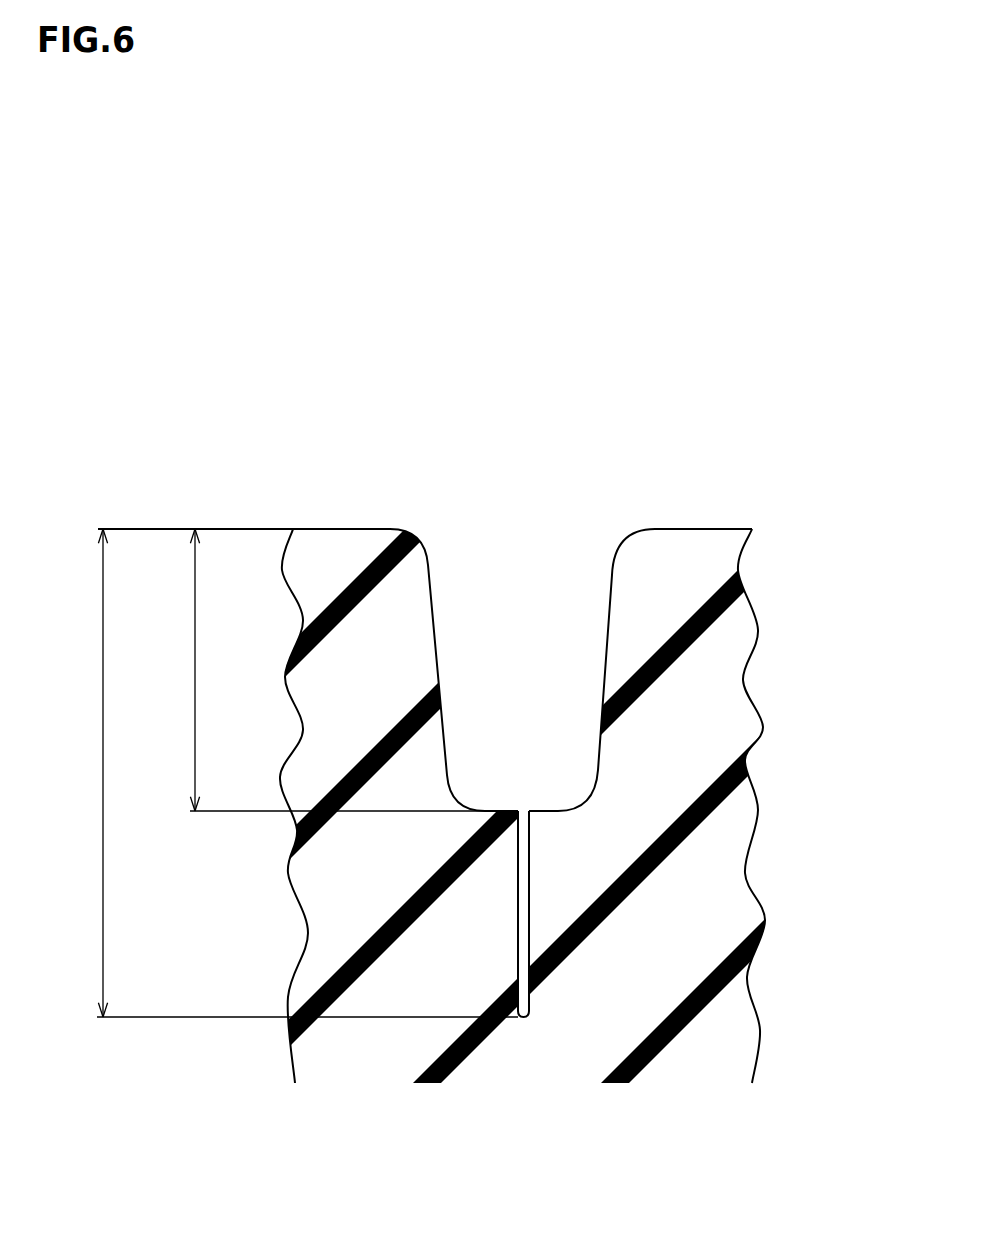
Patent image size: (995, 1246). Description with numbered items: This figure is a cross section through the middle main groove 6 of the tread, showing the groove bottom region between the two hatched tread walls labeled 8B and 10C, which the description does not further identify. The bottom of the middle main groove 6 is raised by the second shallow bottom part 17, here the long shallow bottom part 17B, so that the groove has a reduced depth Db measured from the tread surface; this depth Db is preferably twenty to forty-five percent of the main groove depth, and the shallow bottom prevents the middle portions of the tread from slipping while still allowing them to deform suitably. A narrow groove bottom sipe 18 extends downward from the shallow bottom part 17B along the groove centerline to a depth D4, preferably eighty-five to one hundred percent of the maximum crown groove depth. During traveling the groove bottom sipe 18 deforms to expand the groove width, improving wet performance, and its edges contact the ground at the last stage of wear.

The second housing portion (wall with groove) 8B is at (357, 528).
The middle main groove 6 is at (517, 540).
The third housing portion 10C is at (687, 528).
The second shallow bottom part 17 is at (455, 634).
The long shallow bottom part 17B is at (497, 808).
The groove bottom sipe 18 is at (529, 917).
The depth of the second shallow bottom part Db is at (347, 670).
The depth of the groove bottom sipe D4 is at (303, 773).